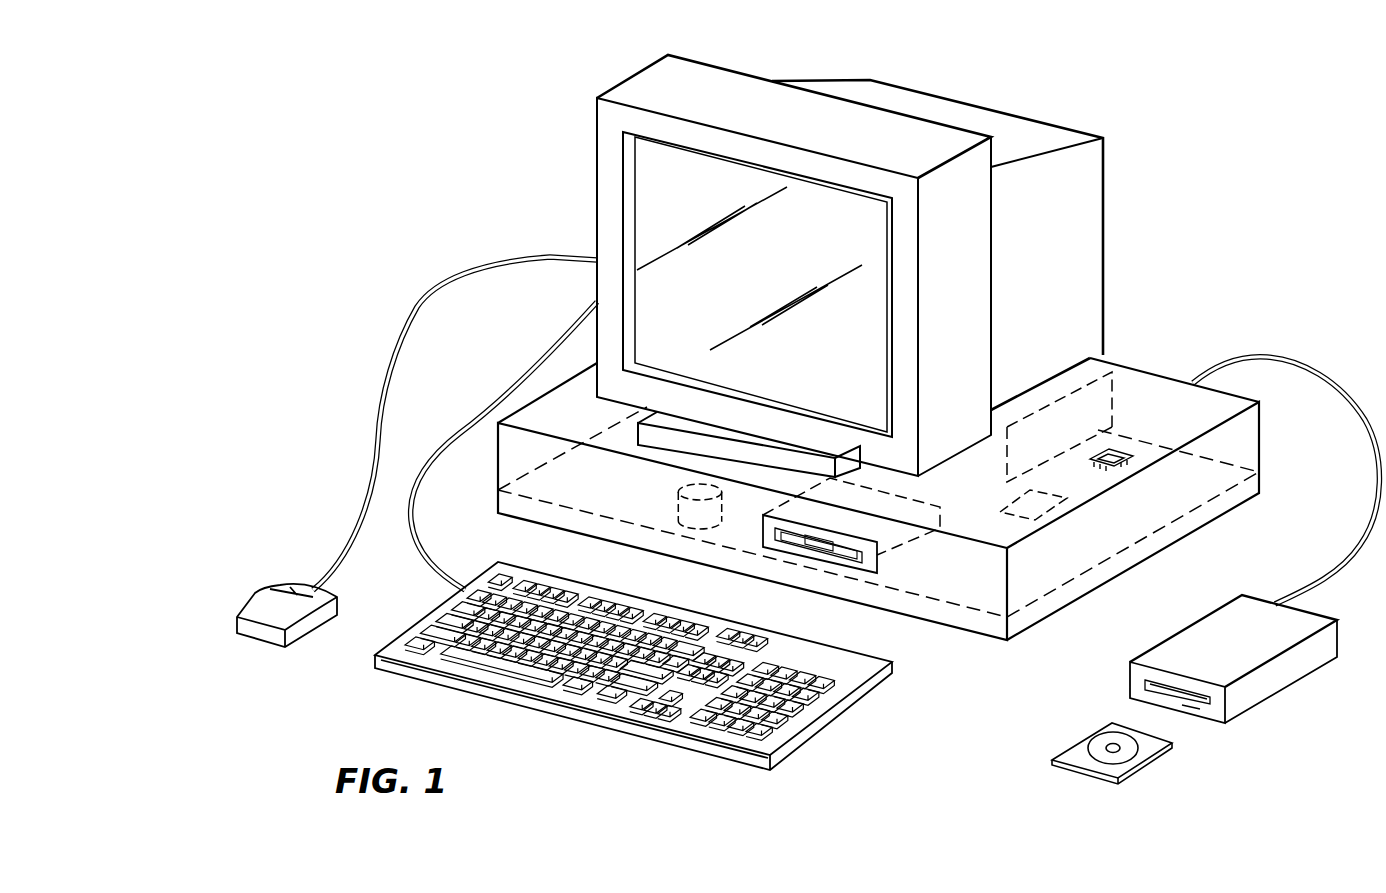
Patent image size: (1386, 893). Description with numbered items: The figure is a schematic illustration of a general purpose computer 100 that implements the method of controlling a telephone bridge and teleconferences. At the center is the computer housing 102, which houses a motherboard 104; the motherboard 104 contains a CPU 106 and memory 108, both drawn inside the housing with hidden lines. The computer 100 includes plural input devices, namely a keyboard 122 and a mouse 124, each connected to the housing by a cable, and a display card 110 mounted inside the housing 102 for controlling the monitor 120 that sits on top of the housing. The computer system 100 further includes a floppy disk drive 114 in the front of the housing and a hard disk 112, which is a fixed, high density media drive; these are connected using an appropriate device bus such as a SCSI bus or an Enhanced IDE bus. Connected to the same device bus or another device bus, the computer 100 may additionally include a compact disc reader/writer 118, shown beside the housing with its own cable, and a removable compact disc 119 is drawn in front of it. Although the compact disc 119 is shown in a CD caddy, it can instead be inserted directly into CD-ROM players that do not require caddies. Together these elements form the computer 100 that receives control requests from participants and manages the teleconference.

The computer 100 is at (237, 100).
The computer housing 102 is at (1252, 438).
The motherboard 104 is at (1158, 447).
The CPU 106 is at (1040, 505).
The memory 108 is at (1113, 448).
The display card 110 is at (1087, 387).
The hard disk 112 is at (680, 497).
The floppy disk drive 114 is at (873, 555).
The compact disc reader/writer 118 is at (1280, 683).
The compact disc 119 is at (1132, 753).
The monitor 120 is at (973, 115).
The keyboard 122 is at (850, 715).
The mouse 124 is at (267, 595).